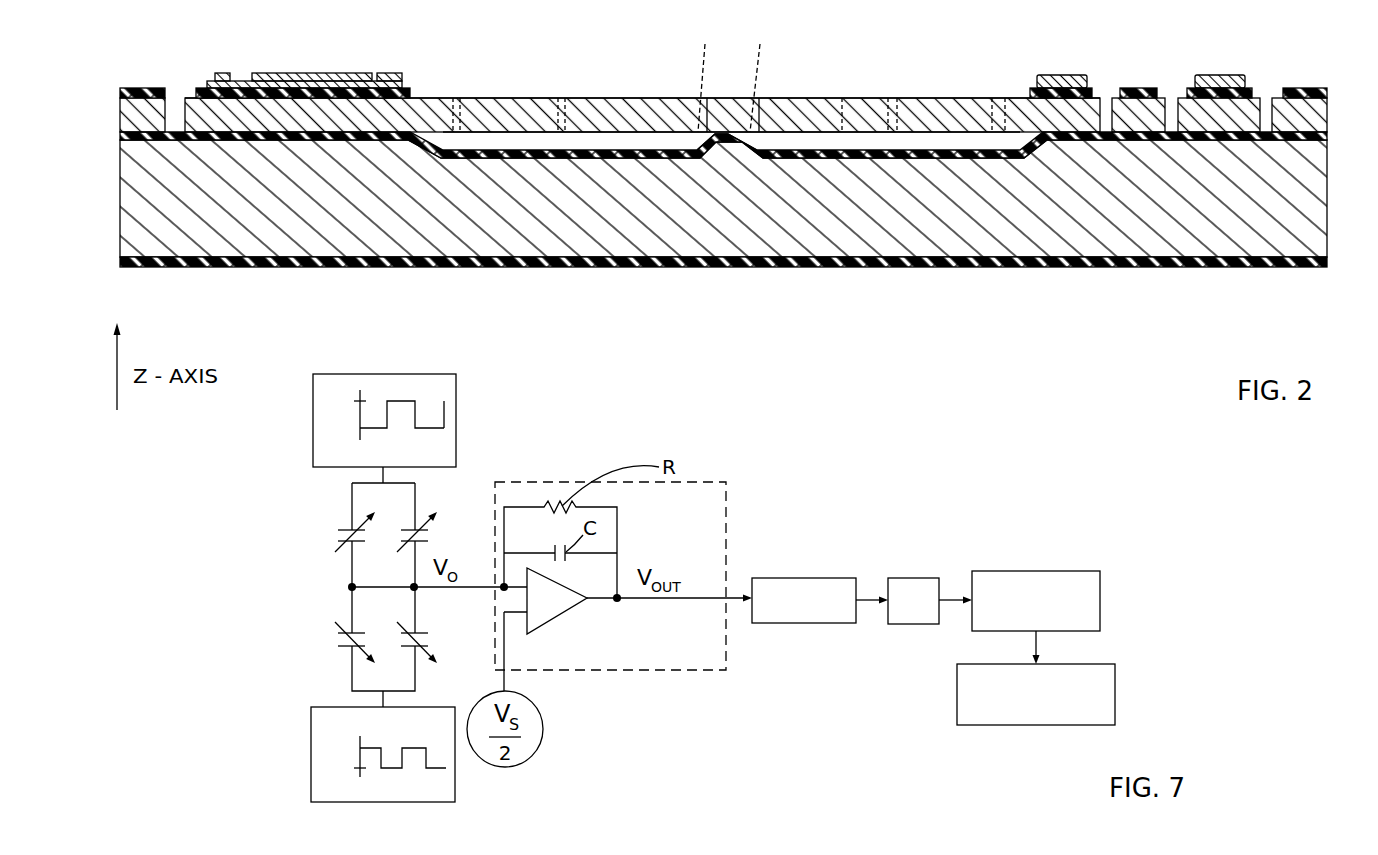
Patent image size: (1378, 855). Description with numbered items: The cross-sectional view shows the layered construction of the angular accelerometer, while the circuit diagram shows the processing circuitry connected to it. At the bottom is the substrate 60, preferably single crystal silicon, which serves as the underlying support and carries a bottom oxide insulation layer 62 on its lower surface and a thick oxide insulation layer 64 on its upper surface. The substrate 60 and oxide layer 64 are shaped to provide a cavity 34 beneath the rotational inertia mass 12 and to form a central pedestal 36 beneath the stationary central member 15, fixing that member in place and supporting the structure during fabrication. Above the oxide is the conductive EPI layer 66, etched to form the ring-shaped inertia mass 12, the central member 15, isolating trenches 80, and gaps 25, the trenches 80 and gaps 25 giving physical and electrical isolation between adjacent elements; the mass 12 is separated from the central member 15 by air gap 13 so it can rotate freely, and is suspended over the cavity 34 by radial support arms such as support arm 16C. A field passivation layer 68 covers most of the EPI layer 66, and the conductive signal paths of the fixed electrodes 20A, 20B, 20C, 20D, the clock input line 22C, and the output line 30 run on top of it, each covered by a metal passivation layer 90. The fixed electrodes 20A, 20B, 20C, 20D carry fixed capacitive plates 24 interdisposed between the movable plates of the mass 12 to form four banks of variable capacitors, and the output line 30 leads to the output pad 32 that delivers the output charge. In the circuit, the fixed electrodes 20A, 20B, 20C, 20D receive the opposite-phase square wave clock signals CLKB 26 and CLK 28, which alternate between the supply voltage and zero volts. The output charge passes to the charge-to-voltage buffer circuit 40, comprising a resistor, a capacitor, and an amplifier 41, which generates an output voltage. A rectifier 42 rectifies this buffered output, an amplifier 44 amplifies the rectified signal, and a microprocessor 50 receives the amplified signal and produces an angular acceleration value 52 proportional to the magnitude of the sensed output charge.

In FIG. 2, the rotational inertia mass 12 is at (647, 92).
In FIG. 2, the air gap 13 is at (734, 76).
In FIG. 2, the central member 15 is at (722, 110).
In FIG. 2, the support arm 16C is at (823, 97).
In FIG. 7, the first fixed electrode 20A is at (341, 532).
In FIG. 7, the second fixed electrode 20B is at (341, 645).
In FIG. 2, the third fixed electrode 20C is at (1060, 78).
In FIG. 7, the third fixed electrode 20C is at (418, 530).
In FIG. 7, the fourth fixed electrode 20D is at (418, 655).
In FIG. 2, the clock input line 22C is at (1220, 75).
In FIG. 2, the fixed capacitive plates 24 is at (910, 113).
In FIG. 2, the gaps 25 is at (457, 97).
In FIG. 7, the clock signal CLKB 26 is at (455, 790).
In FIG. 7, the clock signal CLK 28 is at (457, 391).
In FIG. 2, the output line 30 is at (308, 73).
In FIG. 2, the output pad 32 is at (242, 83).
In FIG. 2, the cavity 34 is at (592, 152).
In FIG. 2, the central pedestal 36 is at (764, 137).
In FIG. 7, the charge-to-voltage buffer circuit 40 is at (567, 482).
In FIG. 7, the amplifier 41 is at (552, 625).
In FIG. 7, the rectifier 42 is at (806, 578).
In FIG. 7, the amplifier 44 is at (913, 578).
In FIG. 7, the microprocessor 50 is at (1030, 571).
In FIG. 7, the angular acceleration value 52 is at (1005, 725).
In FIG. 2, the substrate 60 is at (1308, 238).
In FIG. 2, the bottom oxide insulation layer 62 is at (1222, 268).
In FIG. 2, the thick oxide insulation layer 64 is at (1327, 138).
In FIG. 2, the EPI layer 66 is at (1327, 108).
In FIG. 2, the field passivation layer 68 is at (1308, 85).
In FIG. 2, the isolating trenches 80 is at (178, 97).
In FIG. 2, the metal passivation layer 90 is at (396, 73).